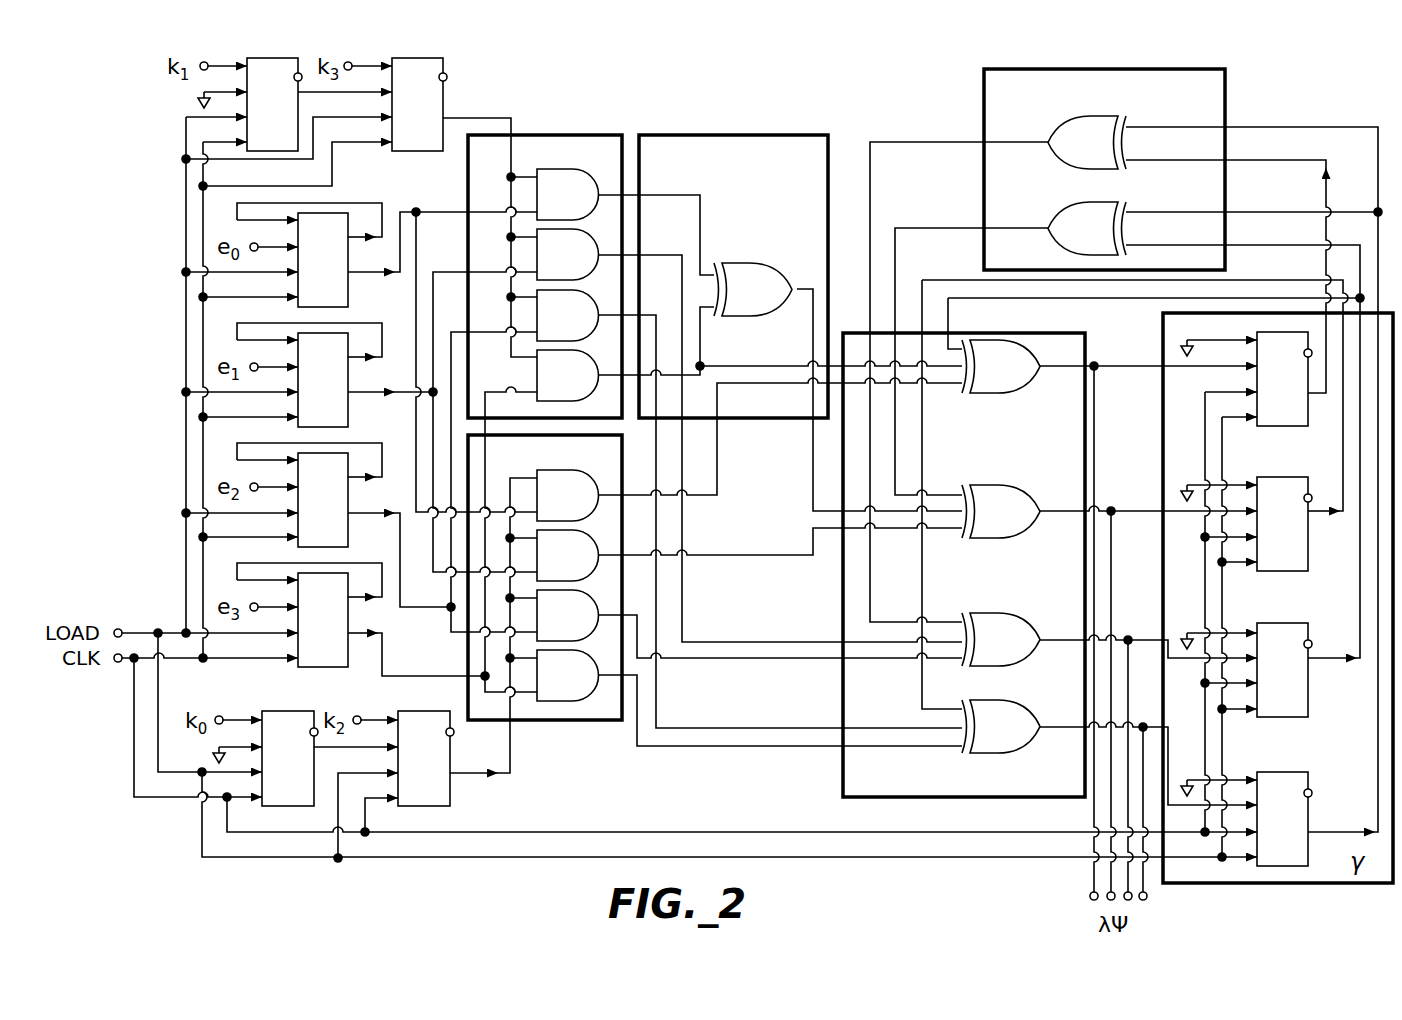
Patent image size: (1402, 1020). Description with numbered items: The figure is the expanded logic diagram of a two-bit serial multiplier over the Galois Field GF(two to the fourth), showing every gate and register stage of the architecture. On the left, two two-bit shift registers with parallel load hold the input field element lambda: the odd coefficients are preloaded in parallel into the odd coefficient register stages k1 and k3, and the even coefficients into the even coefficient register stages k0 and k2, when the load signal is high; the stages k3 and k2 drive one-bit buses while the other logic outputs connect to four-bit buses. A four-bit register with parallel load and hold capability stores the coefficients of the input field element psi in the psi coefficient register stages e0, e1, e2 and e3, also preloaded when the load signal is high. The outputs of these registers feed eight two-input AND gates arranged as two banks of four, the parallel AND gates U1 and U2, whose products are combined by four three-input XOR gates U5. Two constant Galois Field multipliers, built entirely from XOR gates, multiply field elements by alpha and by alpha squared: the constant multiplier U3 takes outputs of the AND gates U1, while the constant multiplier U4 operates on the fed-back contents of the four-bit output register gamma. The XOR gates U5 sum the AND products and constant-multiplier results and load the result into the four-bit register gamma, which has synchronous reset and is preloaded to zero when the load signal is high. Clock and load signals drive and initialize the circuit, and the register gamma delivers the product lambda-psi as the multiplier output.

The parallel AND gates U1 is at (545, 276).
The parallel AND gates U2 is at (545, 577).
The constant Galois Field multiplier U3 is at (733, 276).
The constant Galois Field multiplier U4 is at (1104, 169).
The XOR gates U5 is at (964, 565).
The even coefficient register k0 is at (290, 758).
The odd coefficient register k1 is at (274, 104).
The even coefficient register k2 is at (426, 758).
The odd coefficient register k3 is at (419, 104).
The ψ coefficient register e0 is at (323, 260).
The ψ coefficient register e1 is at (323, 380).
The ψ coefficient register e2 is at (323, 500).
The ψ coefficient register e3 is at (323, 620).
The 4-bit register γ gamma is at (1278, 598).